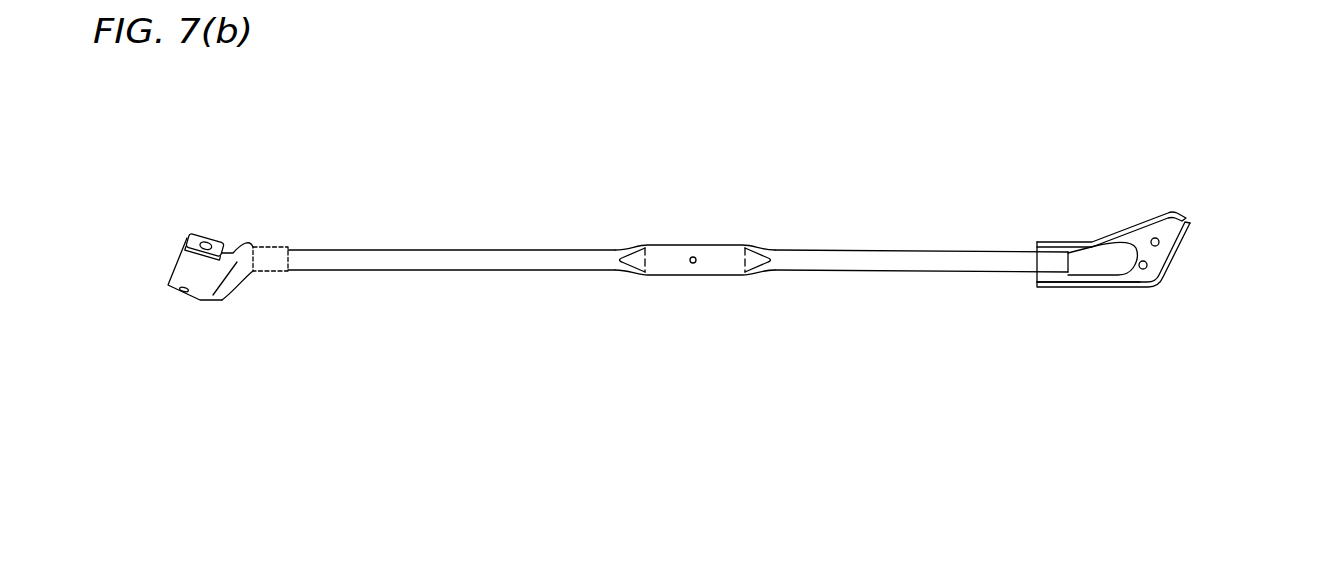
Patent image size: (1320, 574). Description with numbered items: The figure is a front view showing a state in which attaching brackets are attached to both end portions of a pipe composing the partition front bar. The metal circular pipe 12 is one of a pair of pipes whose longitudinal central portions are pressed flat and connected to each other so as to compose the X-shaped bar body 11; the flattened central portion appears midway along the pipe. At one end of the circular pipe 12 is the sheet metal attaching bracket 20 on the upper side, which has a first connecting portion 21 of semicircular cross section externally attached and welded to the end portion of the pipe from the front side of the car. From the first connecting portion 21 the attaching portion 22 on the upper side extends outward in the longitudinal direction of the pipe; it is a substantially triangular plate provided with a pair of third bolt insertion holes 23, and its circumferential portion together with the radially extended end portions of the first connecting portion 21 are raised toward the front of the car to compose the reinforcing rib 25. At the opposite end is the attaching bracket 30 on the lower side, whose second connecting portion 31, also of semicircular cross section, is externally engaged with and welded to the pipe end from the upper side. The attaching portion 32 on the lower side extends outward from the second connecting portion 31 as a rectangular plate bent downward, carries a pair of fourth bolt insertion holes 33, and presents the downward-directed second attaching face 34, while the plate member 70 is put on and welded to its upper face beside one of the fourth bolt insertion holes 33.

The bar body 11 is at (678, 183).
The circular pipe 12 is at (570, 253).
The attaching bracket on the upper side 20 is at (1149, 248).
The first connecting portion 21 is at (1053, 282).
The attaching portion on the upper side 22 is at (1137, 277).
The third bolt insertion holes 23 is at (1159, 244).
The reinforcing rib 25 is at (1095, 237).
The attaching bracket on the lower side 30 is at (180, 255).
The second connecting portion 31 is at (268, 250).
The attaching portion on the lower side 32 is at (188, 267).
The fourth bolt insertion holes 33 is at (200, 235).
The second attaching face 34 is at (202, 285).
The plate member 70 is at (190, 240).